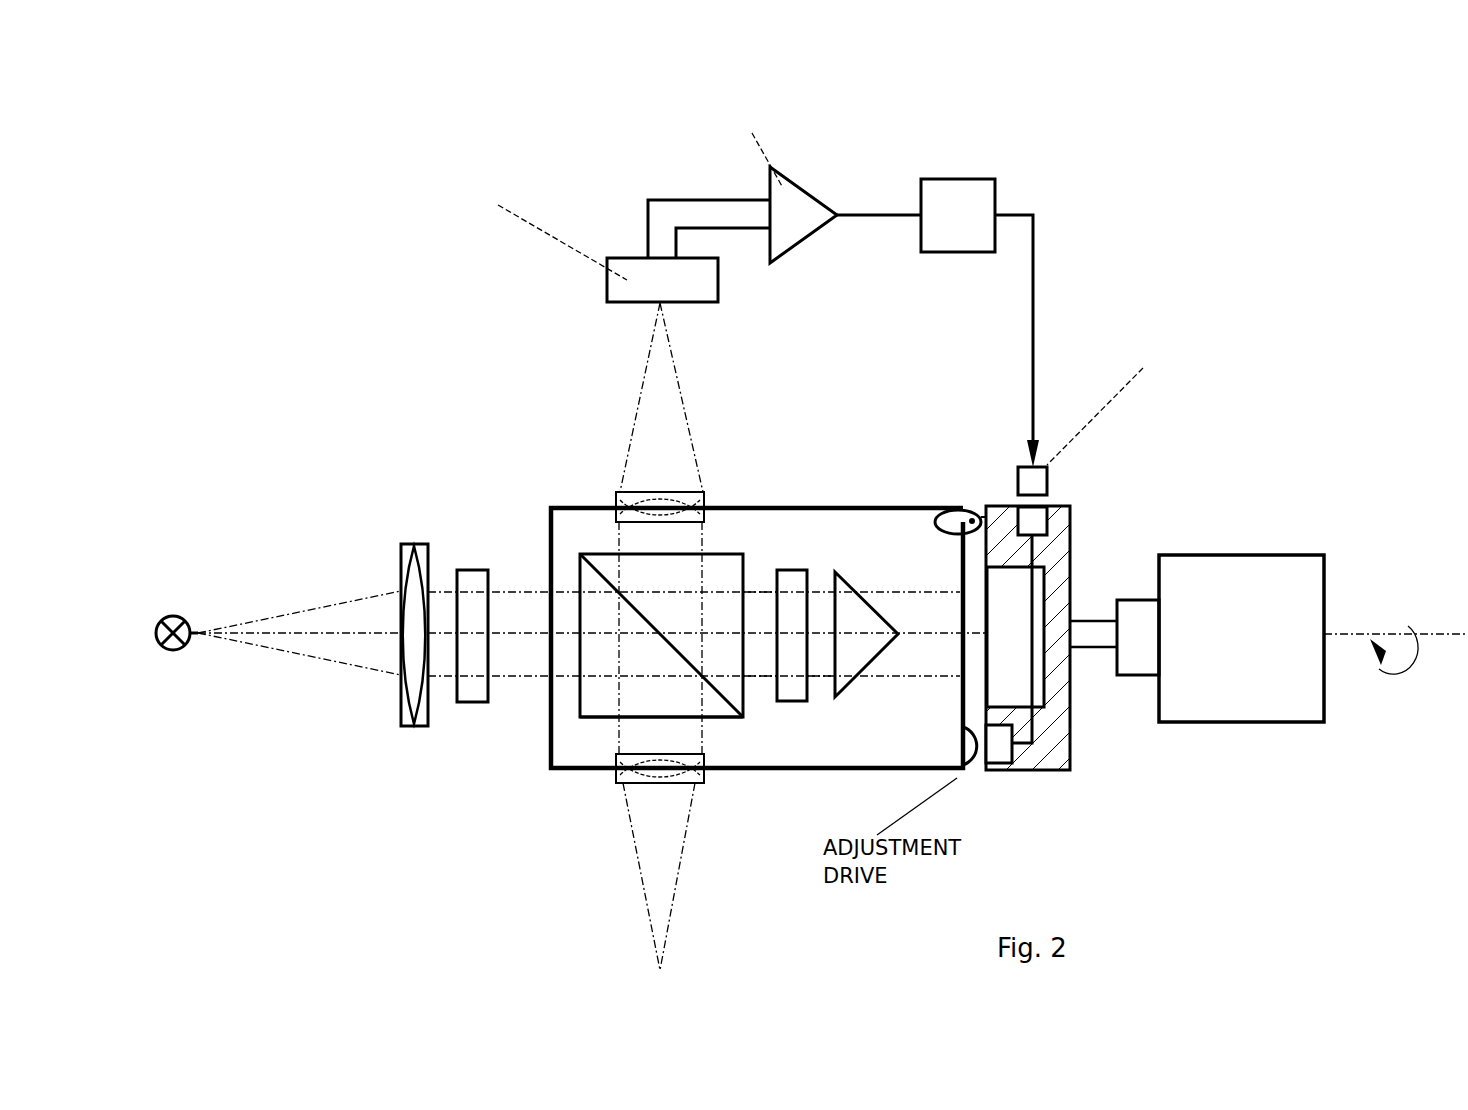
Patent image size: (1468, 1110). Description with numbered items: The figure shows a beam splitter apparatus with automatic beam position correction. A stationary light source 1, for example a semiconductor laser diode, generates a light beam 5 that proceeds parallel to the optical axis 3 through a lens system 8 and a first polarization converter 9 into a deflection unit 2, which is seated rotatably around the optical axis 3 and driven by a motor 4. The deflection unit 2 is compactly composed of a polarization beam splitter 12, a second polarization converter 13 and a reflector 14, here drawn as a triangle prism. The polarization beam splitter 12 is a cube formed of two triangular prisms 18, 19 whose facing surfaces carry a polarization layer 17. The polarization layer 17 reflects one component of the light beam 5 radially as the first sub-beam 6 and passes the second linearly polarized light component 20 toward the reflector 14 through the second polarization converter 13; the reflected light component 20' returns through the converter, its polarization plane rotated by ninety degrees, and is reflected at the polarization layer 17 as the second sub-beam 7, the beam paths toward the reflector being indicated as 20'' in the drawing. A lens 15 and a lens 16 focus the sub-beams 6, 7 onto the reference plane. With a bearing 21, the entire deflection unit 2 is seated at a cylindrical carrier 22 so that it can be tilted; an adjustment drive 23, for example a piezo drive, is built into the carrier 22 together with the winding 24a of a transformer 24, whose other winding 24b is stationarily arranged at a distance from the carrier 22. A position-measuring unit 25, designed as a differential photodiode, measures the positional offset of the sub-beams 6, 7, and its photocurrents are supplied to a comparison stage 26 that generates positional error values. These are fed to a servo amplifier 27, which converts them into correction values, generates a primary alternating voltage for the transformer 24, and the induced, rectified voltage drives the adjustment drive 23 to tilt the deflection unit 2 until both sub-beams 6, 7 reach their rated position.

The stationary light source 1 is at (166, 615).
The deflection unit 2 is at (917, 508).
The optical axis 3 is at (267, 632).
The motor 4 is at (1190, 555).
The light beam 5 is at (341, 603).
The first sub-beam 6 is at (658, 832).
The second sub-beam 7 is at (667, 407).
The lens system 8 is at (405, 545).
The first polarization converter 9 is at (465, 572).
The polarization beam splitter 12 is at (592, 552).
The second polarization converter 13 is at (787, 577).
The reflector 14 is at (848, 598).
The lens 15 is at (681, 775).
The lens 16 is at (665, 505).
The polarization layer 17 is at (737, 708).
The triangular prism 18 is at (703, 592).
The triangular prism 19 is at (595, 703).
The second linearly polarized light component 20 is at (764, 714).
The reflected light component 20' is at (822, 714).
The light beam 20'' is at (771, 554).
The bearing 21 is at (973, 511).
The cylindrical carrier 22 is at (1062, 771).
The adjustment drive 23 is at (1012, 771).
The transformer 24 is at (1117, 436).
The transformer winding 24a is at (1050, 470).
The transformer winding 24b is at (1073, 508).
The position-measuring unit 25 is at (700, 268).
The comparison stage 26 is at (797, 227).
The servo amplifier 27 is at (960, 245).